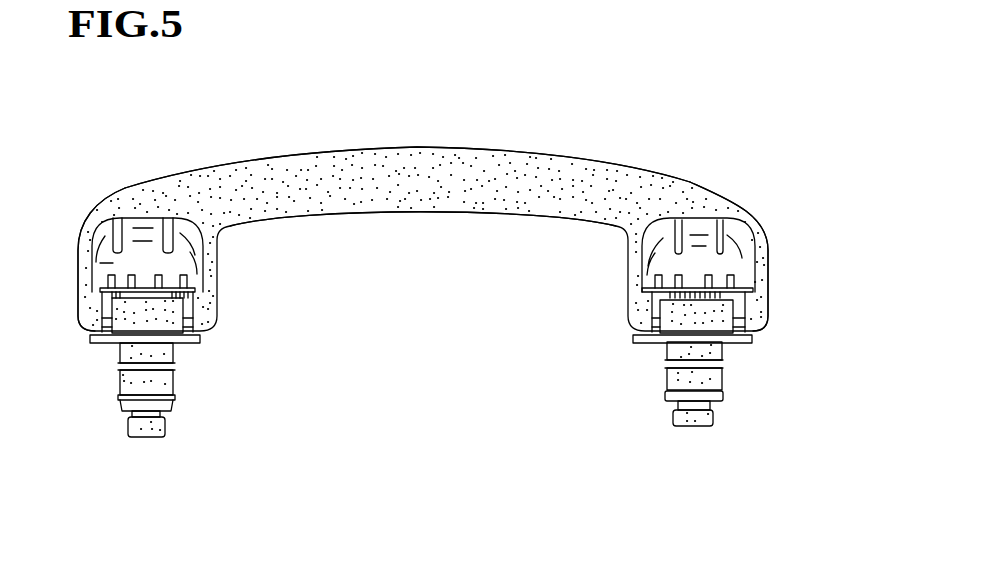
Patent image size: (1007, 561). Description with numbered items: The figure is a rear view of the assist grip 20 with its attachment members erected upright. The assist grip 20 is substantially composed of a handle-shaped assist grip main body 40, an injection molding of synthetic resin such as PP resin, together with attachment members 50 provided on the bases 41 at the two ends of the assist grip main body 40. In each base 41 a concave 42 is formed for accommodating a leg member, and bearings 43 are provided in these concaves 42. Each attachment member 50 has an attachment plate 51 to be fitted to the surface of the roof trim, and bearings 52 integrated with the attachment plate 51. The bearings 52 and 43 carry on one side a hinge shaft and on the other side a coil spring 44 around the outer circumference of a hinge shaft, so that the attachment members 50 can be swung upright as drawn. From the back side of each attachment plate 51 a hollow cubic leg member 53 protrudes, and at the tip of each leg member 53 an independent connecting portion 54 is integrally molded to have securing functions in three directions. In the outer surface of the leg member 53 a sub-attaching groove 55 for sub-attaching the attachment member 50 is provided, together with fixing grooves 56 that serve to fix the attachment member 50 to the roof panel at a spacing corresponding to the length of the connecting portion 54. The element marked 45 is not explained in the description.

The assist grip 20 is at (547, 133).
The assist grip main body 40 is at (420, 173).
The base 41 is at (97, 207).
The concave 42 is at (103, 265).
The bearing 43 is at (143, 290).
The coil spring 44 is at (692, 290).
The pin 45 is at (184, 225).
The attachment member 50 is at (100, 408).
The attachment plate 51 is at (200, 340).
The bearing 52 is at (103, 318).
The leg member 53 is at (120, 372).
The connecting portion 54 is at (163, 436).
The sub-attaching groove 55 is at (173, 398).
The fixing groove 56 is at (175, 369).